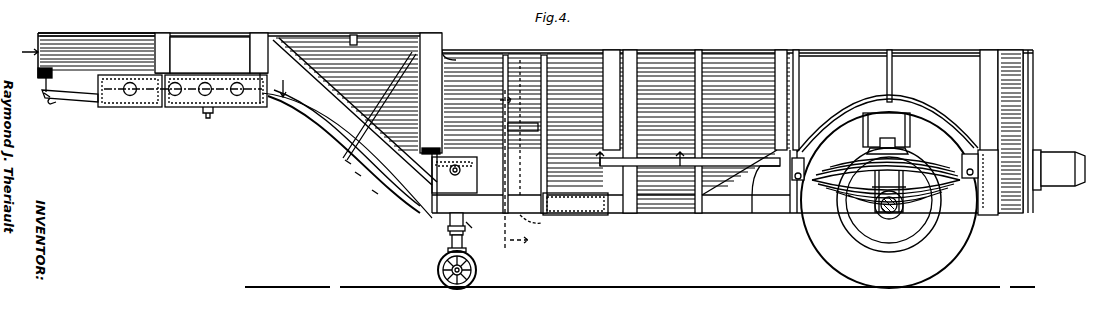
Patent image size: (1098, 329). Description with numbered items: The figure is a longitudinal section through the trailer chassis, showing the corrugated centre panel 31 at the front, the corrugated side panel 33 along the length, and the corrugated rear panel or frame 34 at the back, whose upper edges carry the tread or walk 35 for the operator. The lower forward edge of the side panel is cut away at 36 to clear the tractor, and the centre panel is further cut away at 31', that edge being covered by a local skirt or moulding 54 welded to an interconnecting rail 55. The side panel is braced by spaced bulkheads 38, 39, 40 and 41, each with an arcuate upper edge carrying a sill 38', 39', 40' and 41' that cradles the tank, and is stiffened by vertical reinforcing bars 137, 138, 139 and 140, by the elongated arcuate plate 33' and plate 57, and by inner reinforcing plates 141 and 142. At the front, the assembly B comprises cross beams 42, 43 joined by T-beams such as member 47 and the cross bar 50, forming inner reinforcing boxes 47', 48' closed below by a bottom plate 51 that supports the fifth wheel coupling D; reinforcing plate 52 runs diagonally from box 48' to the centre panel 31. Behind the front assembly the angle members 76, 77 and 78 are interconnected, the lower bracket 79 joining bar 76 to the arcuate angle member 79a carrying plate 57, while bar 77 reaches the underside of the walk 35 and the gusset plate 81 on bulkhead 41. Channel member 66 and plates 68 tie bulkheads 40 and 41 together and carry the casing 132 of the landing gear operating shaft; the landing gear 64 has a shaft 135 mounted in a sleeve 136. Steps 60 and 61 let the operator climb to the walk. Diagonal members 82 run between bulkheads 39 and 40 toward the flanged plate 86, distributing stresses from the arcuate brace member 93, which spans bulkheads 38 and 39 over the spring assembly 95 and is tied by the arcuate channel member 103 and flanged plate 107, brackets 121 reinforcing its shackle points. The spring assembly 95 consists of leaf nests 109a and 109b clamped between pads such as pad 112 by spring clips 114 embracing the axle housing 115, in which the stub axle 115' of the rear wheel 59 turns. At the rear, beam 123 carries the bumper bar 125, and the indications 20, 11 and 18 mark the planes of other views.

The tread or walk 35 is at (40, 34).
The section line 20 is at (150, 70).
The central arcuate frame or panel 31 is at (29, 78).
The interconnecting rail 55 is at (44, 86).
The cut-away portion 31' is at (38, 104).
The local skirt or moulding 54 is at (50, 104).
The reinforcing plate 52 is at (62, 97).
The cross bar 50 is at (100, 102).
The inner reinforcing box 48' is at (178, 106).
The bottom plate 51 is at (156, 105).
The T-beam 47 is at (178, 108).
The inner reinforcing box 47' is at (235, 109).
The bracing assembly B is at (174, 108).
The fifth wheel coupling assembly D is at (206, 117).
The cross beam or bulkhead 43 is at (164, 35).
The elongated arcuate plate 33' is at (210, 42).
The cross beam or bulkhead 42 is at (260, 38).
The side frame panel 33 is at (347, 82).
The angle bar 77 is at (350, 40).
The bulkhead 41 is at (355, 111).
The arcuate sill 41' is at (404, 84).
The angle bar 78 is at (296, 108).
The panel-reinforcing plate 57 is at (326, 114).
The cut-away portion 36 is at (332, 138).
The lower bracket 79 is at (344, 158).
The angle member 76 is at (356, 170).
The arcuate angle member 79a is at (372, 190).
The gusset plate 81 is at (430, 34).
The plate 68 is at (434, 148).
The vertical reinforcing bar 140 is at (504, 65).
The inset step 60 is at (530, 121).
The section line 11 is at (506, 165).
The vertical reinforcing bar 139 is at (560, 70).
The arcuate sill 40' is at (613, 91).
The bulkhead 40 is at (635, 138).
The flanged plate 86 is at (658, 70).
The vertical reinforcing bar 138 is at (700, 70).
The diagonal channel member 82 is at (679, 166).
The section line 18 is at (631, 156).
The inner reinforcing plate 142 is at (726, 192).
The bulkhead 39 is at (762, 205).
The flanged channel member 66 is at (588, 213).
The inset step 61 is at (540, 222).
The sleeve 136 is at (448, 228).
The landing gear shaft 135 is at (448, 250).
The casing 132 is at (466, 224).
The landing gear 64 is at (476, 269).
The inner reinforcing plate 141 is at (850, 58).
The arcuate sill 39' is at (807, 100).
The vertical reinforcing bar 137 is at (894, 67).
The arcuate brace member 93 is at (842, 117).
The flanged plate 107 is at (888, 122).
The arcuate channel member 103 is at (896, 140).
The arcuate sill 38' is at (974, 102).
The rear panel or frame 34 is at (1030, 52).
The bumper beam 123 is at (1038, 150).
The bumper bar 125 is at (1076, 156).
The bulkhead 38 is at (988, 201).
The rear wheel 59 is at (811, 261).
The spring assembly 95 is at (932, 214).
The axle housing 115 is at (867, 200).
The stub axle 115' is at (874, 214).
The spring clip 114 is at (890, 214).
The spring pad 112 is at (902, 195).
The spring leaf nest 109b is at (828, 172).
The spring leaf nest 109a is at (832, 188).
The bracket 121 is at (800, 176).